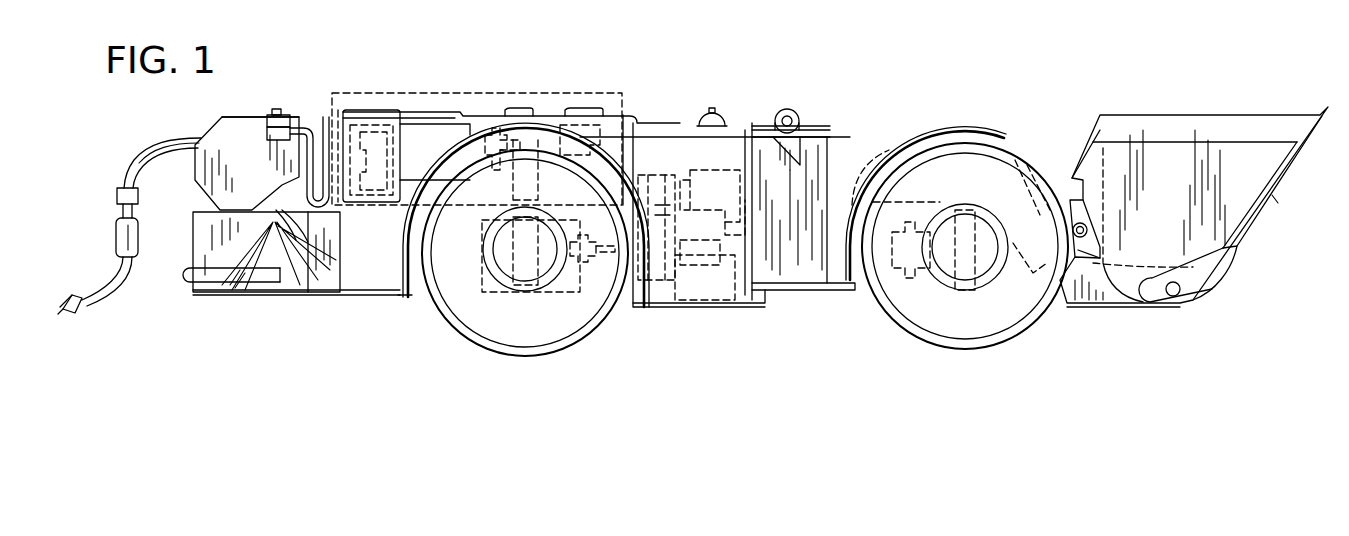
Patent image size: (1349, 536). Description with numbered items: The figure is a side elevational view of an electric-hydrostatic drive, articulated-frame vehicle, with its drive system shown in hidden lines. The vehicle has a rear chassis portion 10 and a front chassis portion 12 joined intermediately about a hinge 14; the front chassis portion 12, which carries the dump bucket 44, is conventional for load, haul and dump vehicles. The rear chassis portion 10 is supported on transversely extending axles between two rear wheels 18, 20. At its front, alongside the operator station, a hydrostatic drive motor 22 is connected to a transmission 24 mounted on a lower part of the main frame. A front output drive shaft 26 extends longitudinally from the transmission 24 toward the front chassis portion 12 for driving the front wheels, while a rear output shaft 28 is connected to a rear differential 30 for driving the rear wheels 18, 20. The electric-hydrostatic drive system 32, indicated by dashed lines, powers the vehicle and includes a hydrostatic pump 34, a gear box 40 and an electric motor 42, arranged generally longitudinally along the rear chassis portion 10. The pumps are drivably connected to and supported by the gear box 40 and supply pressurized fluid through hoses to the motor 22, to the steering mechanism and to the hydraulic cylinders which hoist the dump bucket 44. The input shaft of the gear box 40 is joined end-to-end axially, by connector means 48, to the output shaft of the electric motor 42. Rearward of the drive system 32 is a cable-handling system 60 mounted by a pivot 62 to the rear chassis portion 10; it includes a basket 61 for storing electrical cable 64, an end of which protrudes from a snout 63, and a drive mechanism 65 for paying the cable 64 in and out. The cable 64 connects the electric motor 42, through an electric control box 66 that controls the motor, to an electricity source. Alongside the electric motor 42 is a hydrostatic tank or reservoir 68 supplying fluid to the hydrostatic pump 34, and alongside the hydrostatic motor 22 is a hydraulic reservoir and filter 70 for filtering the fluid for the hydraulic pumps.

The rear chassis portion 10 is at (541, 71).
The front chassis portion 12 is at (1017, 96).
The hinge 14 is at (762, 111).
The rear wheel 18 is at (538, 355).
The rear wheel 20 is at (965, 246).
The hydrostatic drive motor 22 is at (728, 190).
The transmission 24 is at (663, 173).
The front output drive shaft 26 is at (692, 258).
The rear output shaft 28 is at (598, 258).
The rear differential 30 is at (518, 288).
The electric-hydrostatic drive system 32 is at (368, 86).
The hydrostatic pump 34 is at (579, 106).
The gear box 40 is at (516, 138).
The electric motor 42 is at (386, 122).
The dump bucket 44 is at (1203, 115).
The connector means 48 is at (490, 130).
The cable-handling system 60 is at (211, 117).
The basket 61 is at (240, 252).
The pivot 62 is at (283, 109).
The snout 63 is at (122, 170).
The electrical cable 64 is at (110, 278).
The drive mechanism 65 is at (243, 117).
The electric control box 66 is at (433, 108).
The hydrostatic tank or reservoir 68 is at (445, 118).
The hydraulic reservoir and filter 70 is at (698, 120).